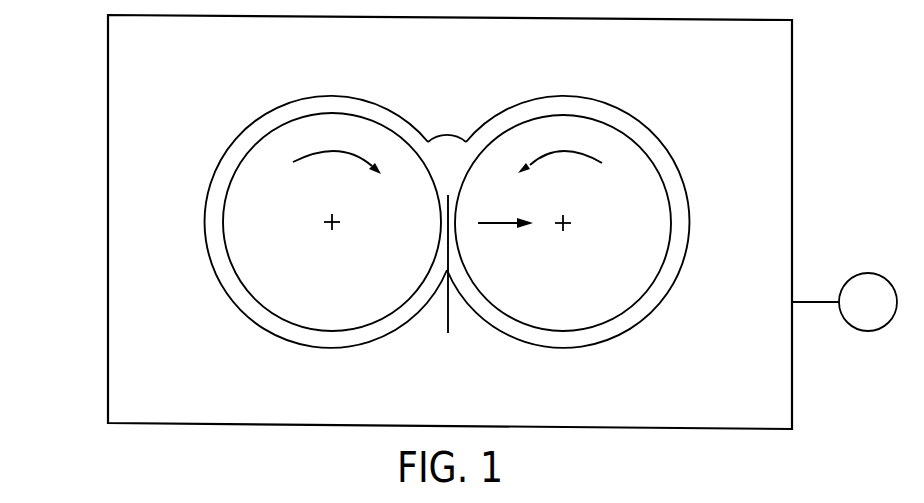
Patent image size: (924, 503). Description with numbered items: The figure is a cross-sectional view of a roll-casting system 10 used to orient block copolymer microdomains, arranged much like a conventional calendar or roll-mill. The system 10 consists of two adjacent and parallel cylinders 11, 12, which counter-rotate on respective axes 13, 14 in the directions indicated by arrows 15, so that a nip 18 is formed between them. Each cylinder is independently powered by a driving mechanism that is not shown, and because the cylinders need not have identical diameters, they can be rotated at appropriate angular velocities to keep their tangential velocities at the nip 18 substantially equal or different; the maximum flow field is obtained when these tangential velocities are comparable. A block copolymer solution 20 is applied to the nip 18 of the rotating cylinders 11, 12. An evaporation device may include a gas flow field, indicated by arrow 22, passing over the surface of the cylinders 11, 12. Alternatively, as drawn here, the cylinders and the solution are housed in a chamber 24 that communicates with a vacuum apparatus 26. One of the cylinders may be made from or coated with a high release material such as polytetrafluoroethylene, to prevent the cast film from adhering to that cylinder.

The system 10 is at (80, 160).
The cylinder 11 is at (640, 270).
The cylinder 12 is at (405, 268).
The axis 13 is at (567, 218).
The axis 14 is at (335, 218).
The arrows 15 is at (350, 151).
The nip 18 is at (450, 276).
The block copolymer solution 20 is at (448, 143).
The arrow indicating gas flow field 22 is at (200, 93).
The chamber 24 is at (792, 77).
The vacuum apparatus 26 is at (844, 302).